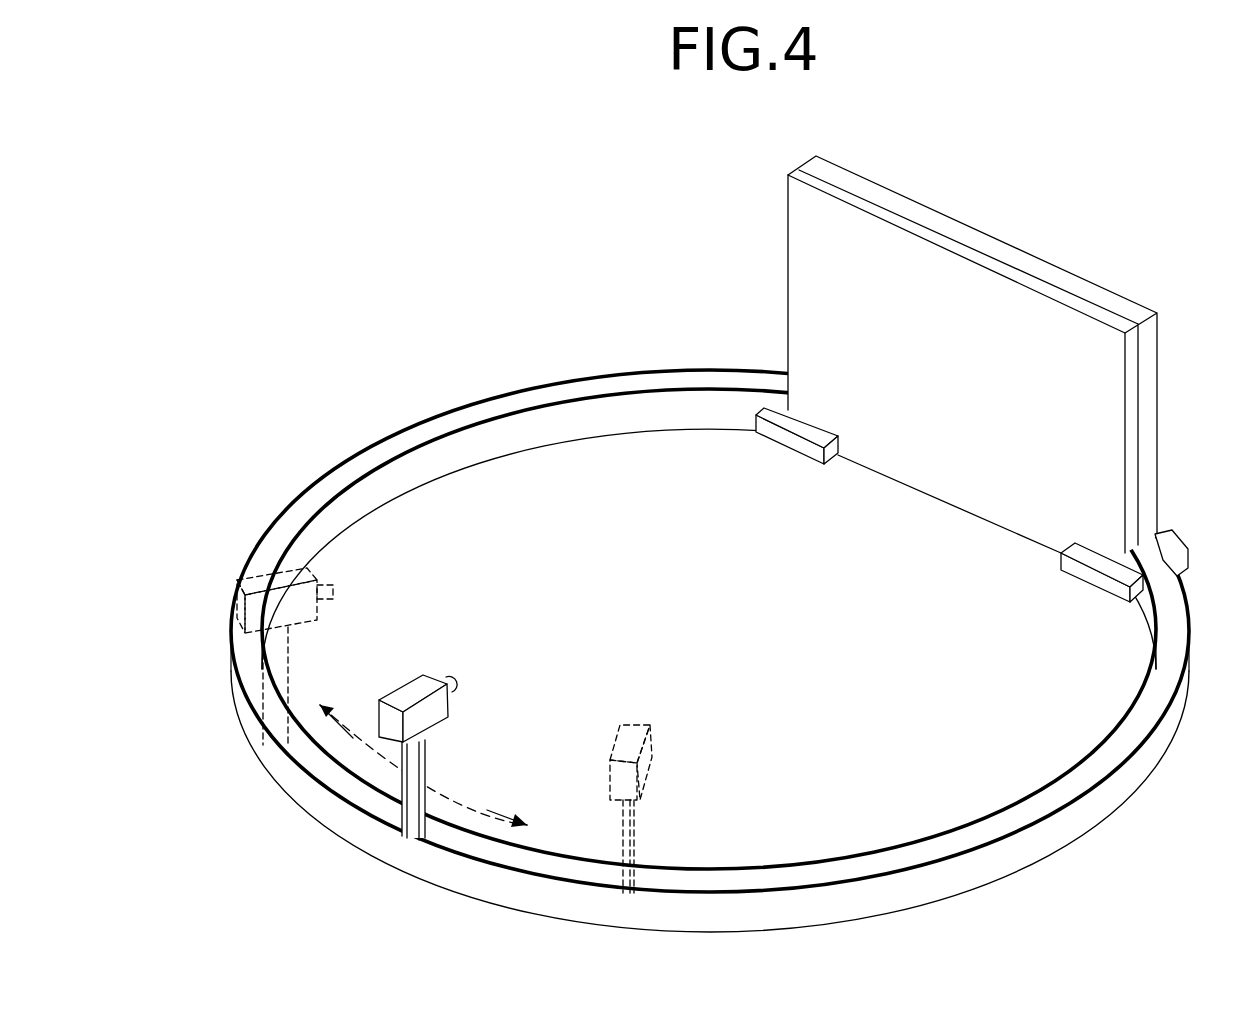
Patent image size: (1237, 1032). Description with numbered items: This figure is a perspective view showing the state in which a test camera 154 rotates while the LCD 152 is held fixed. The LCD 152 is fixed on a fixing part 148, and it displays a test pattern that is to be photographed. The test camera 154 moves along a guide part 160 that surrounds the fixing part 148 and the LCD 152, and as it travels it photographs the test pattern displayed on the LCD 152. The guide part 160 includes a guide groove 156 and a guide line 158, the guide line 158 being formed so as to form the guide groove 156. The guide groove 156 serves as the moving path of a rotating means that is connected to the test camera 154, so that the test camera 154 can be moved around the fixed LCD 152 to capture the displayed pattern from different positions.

The fixing part 148 is at (914, 379).
The LCD 152 is at (797, 263).
The test camera 154 is at (392, 720).
The guide groove 156 is at (442, 430).
The guide line 158 is at (378, 447).
The guide part 160 is at (710, 618).